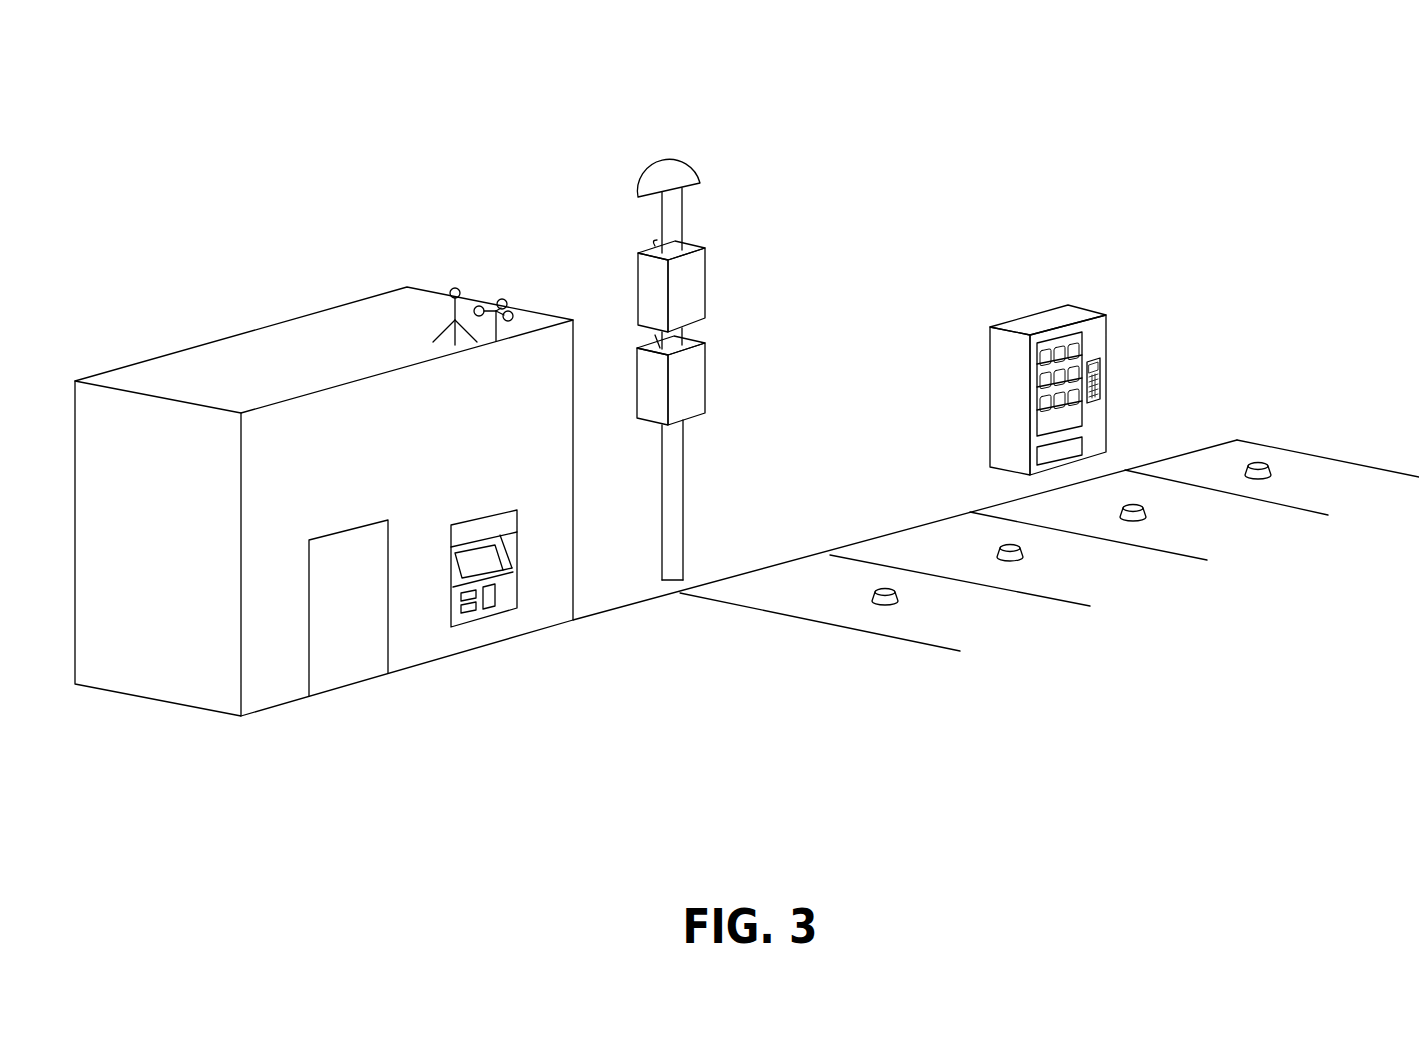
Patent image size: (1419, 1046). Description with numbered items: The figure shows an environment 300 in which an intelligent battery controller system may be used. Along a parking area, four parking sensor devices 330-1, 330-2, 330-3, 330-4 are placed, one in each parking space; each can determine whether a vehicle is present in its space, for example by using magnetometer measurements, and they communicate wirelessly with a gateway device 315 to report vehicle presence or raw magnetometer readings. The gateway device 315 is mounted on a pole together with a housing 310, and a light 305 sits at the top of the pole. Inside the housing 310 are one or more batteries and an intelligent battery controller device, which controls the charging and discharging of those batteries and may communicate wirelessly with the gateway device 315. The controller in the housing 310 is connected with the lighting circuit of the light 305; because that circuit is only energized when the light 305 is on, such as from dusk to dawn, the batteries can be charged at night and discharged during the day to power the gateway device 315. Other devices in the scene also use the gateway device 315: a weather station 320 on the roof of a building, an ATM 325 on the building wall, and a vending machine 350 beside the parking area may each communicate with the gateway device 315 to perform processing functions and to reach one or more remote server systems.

The environment 300 is at (218, 104).
The light 305 is at (690, 187).
The housing 310 is at (707, 265).
The gateway device 315 is at (707, 375).
The weather station 320 is at (504, 299).
The ATM 325 is at (508, 508).
The sensor device 330-1 is at (898, 595).
The sensor device 330-2 is at (1022, 551).
The sensor device 330-3 is at (1145, 511).
The sensor device 330-4 is at (1270, 469).
The vending machine 350 is at (1108, 348).